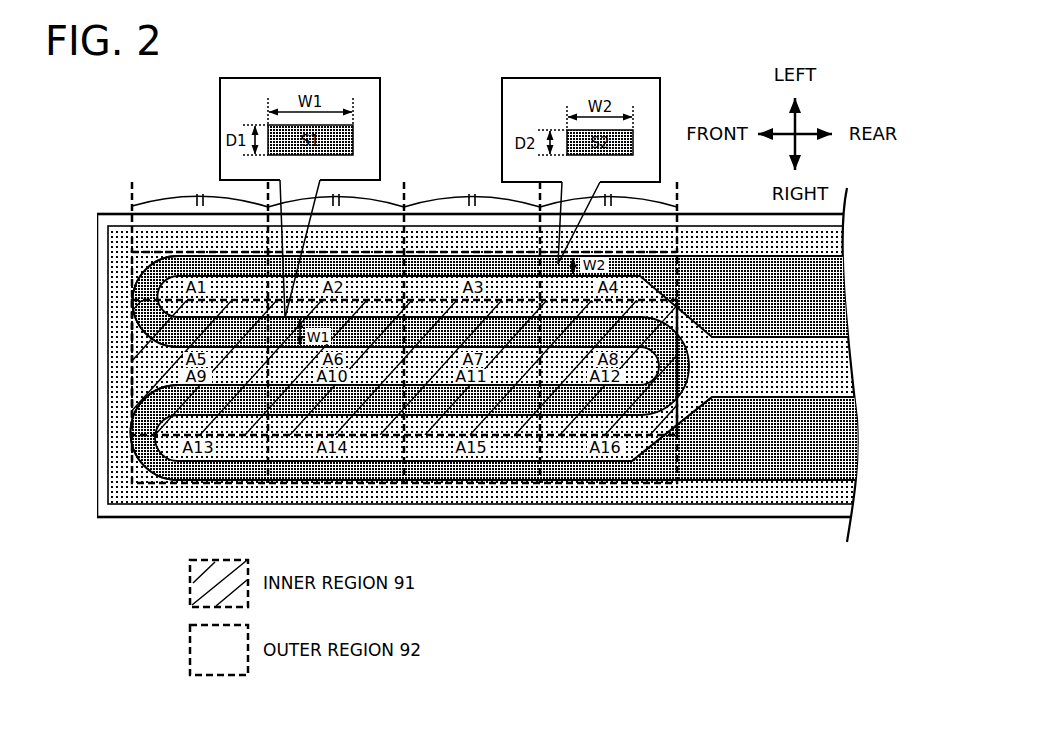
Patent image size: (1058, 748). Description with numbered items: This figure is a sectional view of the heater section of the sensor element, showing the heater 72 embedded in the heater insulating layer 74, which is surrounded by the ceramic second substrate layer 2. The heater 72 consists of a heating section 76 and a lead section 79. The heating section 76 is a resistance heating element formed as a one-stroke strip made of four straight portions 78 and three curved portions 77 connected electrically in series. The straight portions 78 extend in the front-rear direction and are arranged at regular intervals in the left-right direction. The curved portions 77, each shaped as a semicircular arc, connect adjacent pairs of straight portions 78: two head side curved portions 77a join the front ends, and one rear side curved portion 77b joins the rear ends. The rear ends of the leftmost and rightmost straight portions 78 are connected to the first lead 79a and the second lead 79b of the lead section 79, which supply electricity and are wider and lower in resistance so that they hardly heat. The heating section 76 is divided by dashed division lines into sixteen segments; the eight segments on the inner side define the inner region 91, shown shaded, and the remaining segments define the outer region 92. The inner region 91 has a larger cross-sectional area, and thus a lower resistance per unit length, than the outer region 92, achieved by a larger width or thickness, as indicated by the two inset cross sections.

The second substrate layer 2 is at (117, 511).
The heater insulating layer 74 is at (150, 496).
The heater 72 is at (598, 653).
The heating section 76 is at (657, 613).
The curved portions 77 is at (641, 551).
The head side curved portions 77a is at (150, 462).
The rear side curved portion 77b is at (624, 415).
The straight portions 78 is at (556, 440).
The lead section 79 is at (693, 613).
The first lead 79a is at (746, 330).
The second lead 79b is at (770, 425).
The inner region 91 is at (88, 303).
The outer region 92 is at (88, 253).